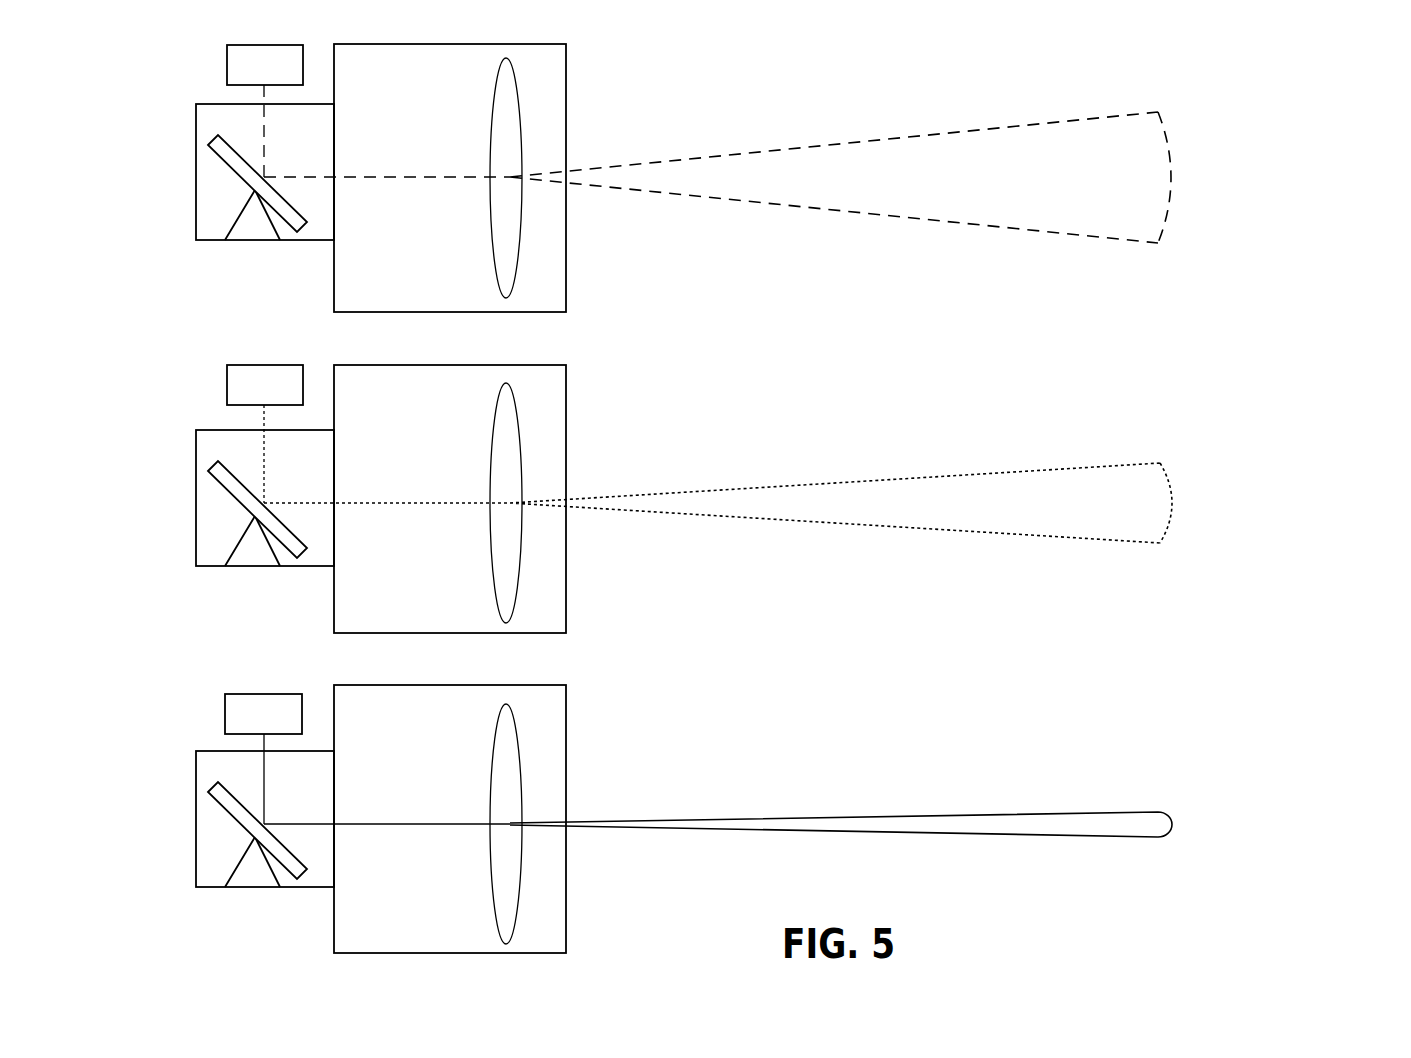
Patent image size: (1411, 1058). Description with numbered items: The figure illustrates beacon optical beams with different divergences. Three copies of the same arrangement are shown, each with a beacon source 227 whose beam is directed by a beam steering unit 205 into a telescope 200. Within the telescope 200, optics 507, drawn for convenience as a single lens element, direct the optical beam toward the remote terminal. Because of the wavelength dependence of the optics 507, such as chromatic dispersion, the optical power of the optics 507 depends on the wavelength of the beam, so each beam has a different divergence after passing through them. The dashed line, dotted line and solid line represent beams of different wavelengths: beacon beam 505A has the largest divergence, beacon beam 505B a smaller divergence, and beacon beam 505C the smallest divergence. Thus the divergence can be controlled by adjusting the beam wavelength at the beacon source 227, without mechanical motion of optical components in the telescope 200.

The telescope 200 is at (423, 105).
The beam steering unit 205 is at (248, 240).
The beacon source 227 is at (285, 76).
The optics 507 is at (517, 738).
The beacon beam 505A is at (1172, 167).
The beacon beam 505B is at (1172, 488).
The beacon beam 505C is at (1172, 818).